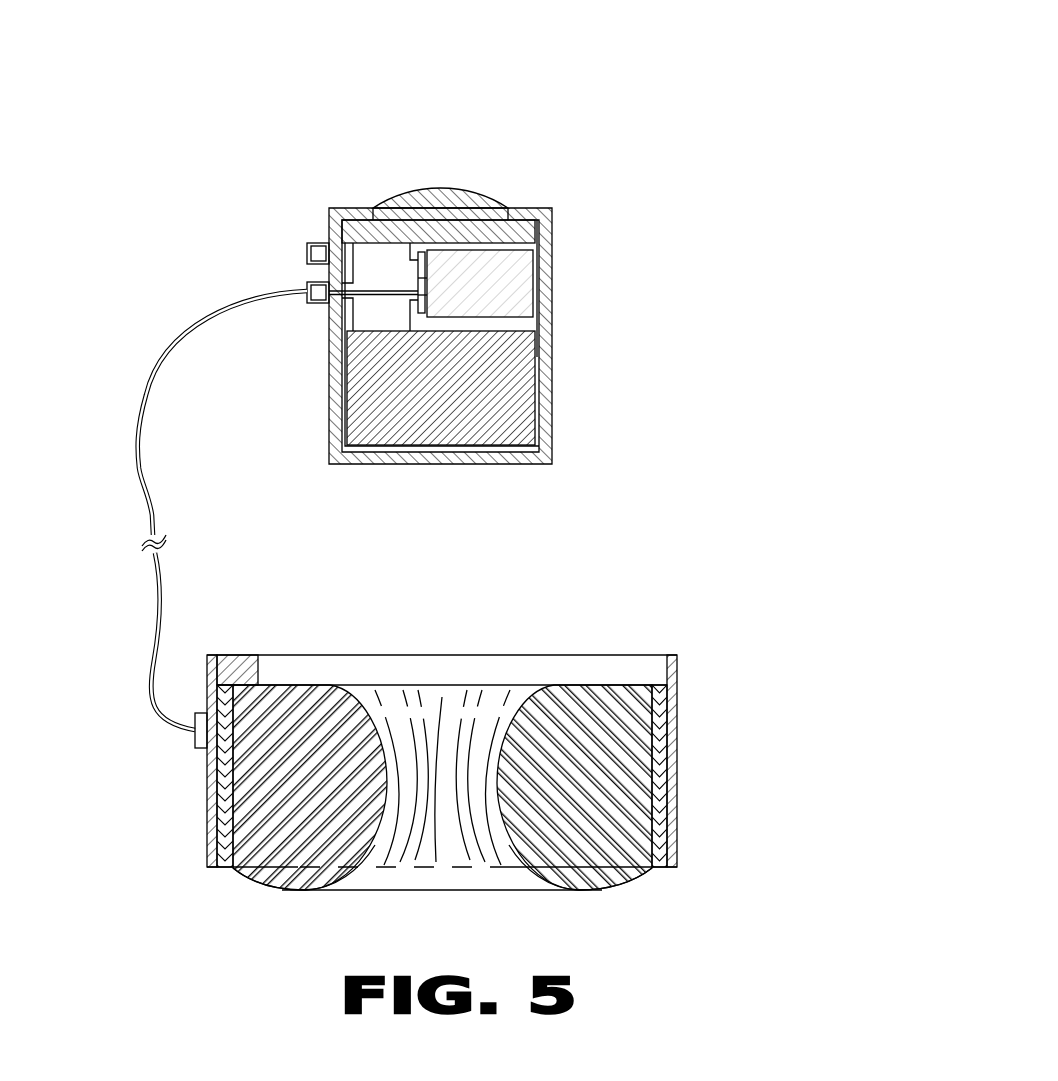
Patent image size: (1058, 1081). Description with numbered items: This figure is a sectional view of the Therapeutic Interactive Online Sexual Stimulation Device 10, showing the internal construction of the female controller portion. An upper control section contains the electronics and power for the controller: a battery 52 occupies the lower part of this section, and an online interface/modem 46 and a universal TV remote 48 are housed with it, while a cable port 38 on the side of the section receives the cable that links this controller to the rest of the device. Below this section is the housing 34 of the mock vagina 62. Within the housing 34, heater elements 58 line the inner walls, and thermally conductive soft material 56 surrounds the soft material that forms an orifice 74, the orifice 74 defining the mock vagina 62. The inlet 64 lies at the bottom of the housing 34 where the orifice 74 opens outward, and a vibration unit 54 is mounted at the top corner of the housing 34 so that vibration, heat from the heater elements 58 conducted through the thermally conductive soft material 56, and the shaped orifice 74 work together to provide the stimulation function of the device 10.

The Therapeutic Interactive Online Sexual Stimulation Device 10 is at (433, 369).
The housing 34 is at (672, 823).
The cable port 38 is at (307, 290).
The online interface/modem 46 is at (489, 206).
The universal TV remote 48 is at (527, 393).
The battery 52 is at (518, 283).
The vibration unit 54 is at (235, 655).
The thermally conductive soft material 56 is at (303, 715).
The heater element 58 is at (662, 752).
The mock vagina 62 is at (281, 872).
The inlet 64 is at (452, 862).
The orifice 74 is at (447, 705).